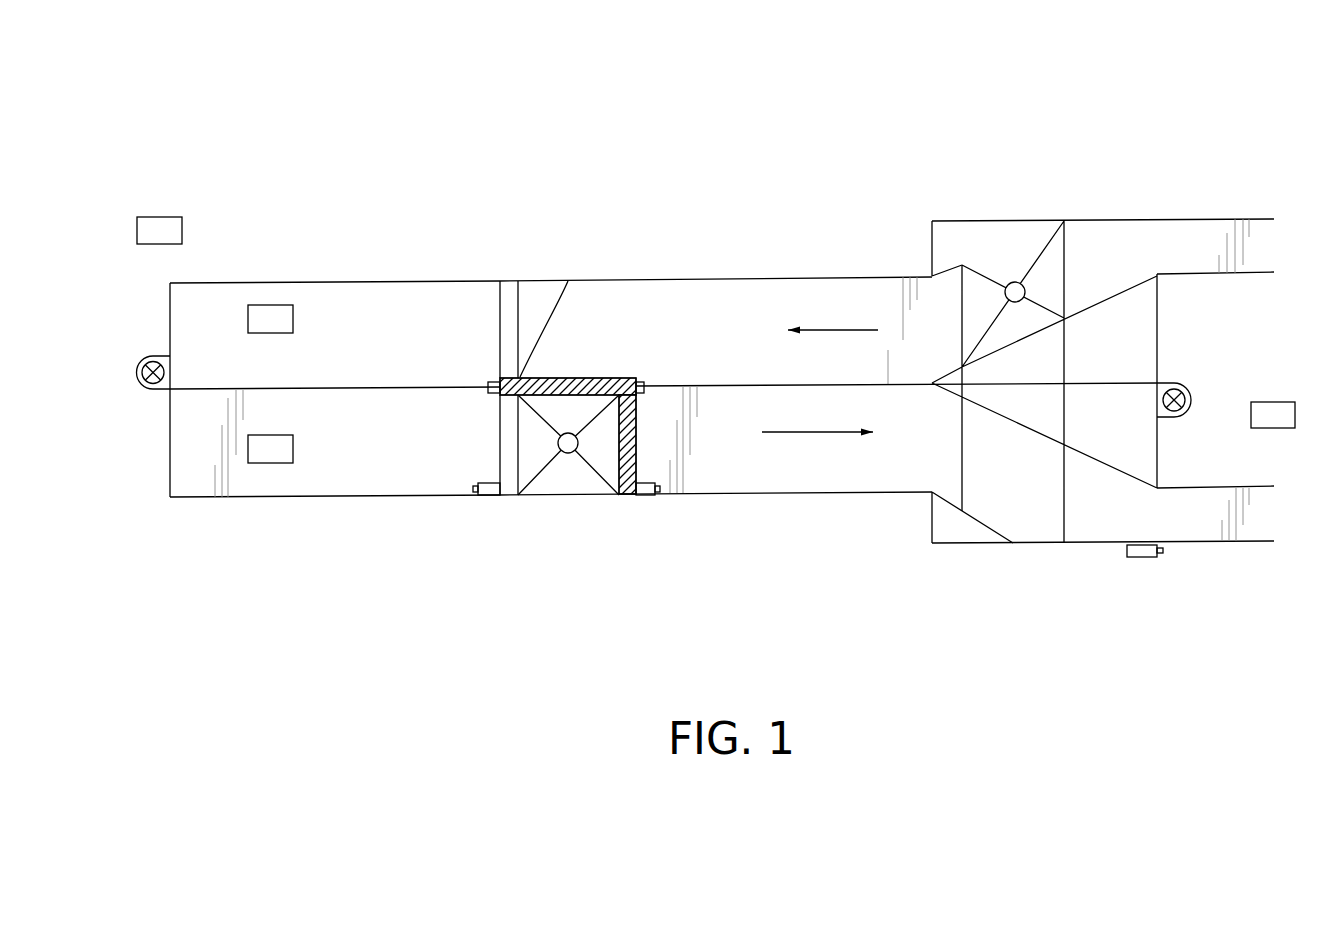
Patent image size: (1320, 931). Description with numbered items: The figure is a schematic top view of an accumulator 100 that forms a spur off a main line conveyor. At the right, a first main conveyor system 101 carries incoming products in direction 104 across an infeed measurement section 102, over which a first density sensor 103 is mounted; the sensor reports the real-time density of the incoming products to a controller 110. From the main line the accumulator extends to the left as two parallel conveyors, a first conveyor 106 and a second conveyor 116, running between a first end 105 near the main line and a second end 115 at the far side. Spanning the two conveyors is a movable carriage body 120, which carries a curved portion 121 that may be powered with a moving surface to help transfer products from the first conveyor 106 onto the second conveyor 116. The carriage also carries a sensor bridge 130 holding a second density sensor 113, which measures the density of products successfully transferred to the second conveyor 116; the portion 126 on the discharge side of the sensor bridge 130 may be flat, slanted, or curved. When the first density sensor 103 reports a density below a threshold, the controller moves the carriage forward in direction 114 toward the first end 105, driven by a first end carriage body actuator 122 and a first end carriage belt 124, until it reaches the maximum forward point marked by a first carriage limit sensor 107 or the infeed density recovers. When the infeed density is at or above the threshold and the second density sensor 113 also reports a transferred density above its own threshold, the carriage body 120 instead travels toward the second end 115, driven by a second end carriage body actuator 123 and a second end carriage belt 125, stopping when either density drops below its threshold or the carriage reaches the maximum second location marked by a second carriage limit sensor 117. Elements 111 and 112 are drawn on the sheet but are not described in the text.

The accumulator 100 is at (739, 140).
The first main conveyor system 101 is at (1177, 243).
The infeed measurement section 102 is at (1032, 248).
The first density sensor 103 is at (1007, 278).
The direction of incoming products 104 is at (825, 317).
The first end 105 is at (1273, 415).
The first conveyor 106 is at (270, 319).
The first carriage limit sensor 107 is at (643, 500).
The controller 110 is at (1140, 565).
The housing bottom wall 111 is at (1203, 523).
The indoor fan 112 is at (583, 478).
The second density sensor 113 is at (566, 460).
The forward direction 114 is at (823, 448).
The second end 115 is at (159, 230).
The second conveyor 116 is at (270, 449).
The second carriage limit sensor 117 is at (487, 500).
The carriage body 120 is at (510, 298).
The curved portion 121 is at (560, 302).
The first end carriage body actuator 122 is at (1195, 398).
The second end carriage body actuator 123 is at (148, 400).
The first end carriage belt 124 is at (705, 398).
The second end carriage belt 125 is at (355, 400).
The discharge side portion 126 is at (530, 448).
The sensor bridge 130 is at (597, 368).